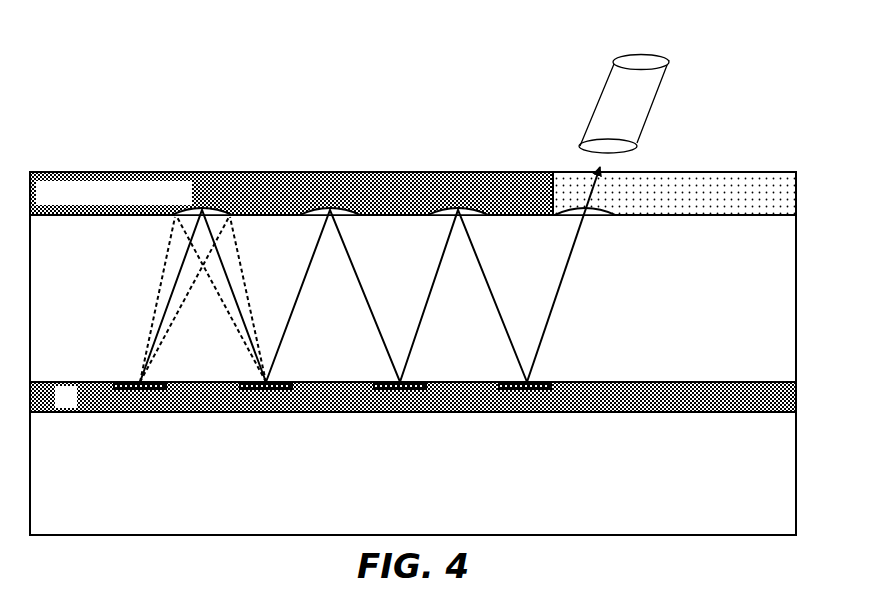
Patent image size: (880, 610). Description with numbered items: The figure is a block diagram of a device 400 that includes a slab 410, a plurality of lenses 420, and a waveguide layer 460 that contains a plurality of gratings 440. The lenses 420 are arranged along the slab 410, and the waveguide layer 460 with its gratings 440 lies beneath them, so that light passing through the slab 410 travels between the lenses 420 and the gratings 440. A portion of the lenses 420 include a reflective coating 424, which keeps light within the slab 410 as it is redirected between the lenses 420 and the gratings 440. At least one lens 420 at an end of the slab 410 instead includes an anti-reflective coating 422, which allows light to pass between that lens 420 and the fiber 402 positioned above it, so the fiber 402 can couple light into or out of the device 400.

The device 400 is at (194, 94).
The fiber 402 is at (643, 60).
The slab 410 is at (710, 295).
The lenses 420 is at (575, 207).
The anti-reflective coating 422 is at (706, 172).
The reflective coating 424 is at (173, 172).
The gratings 440 is at (546, 380).
The waveguide layer 460 is at (640, 393).